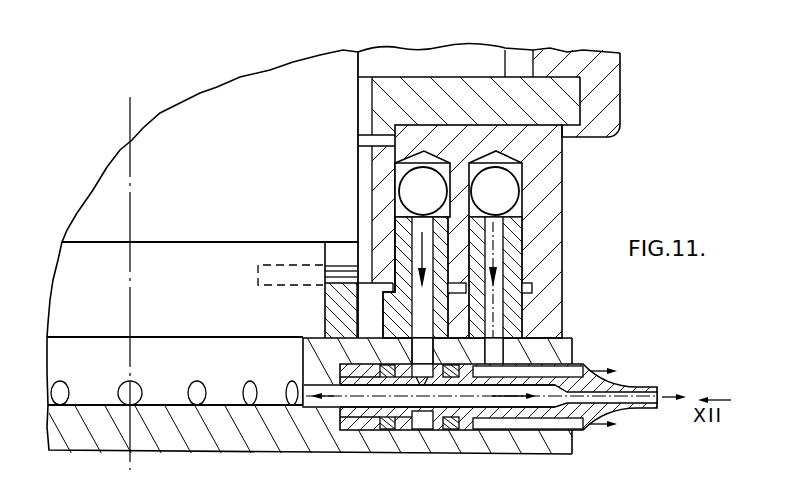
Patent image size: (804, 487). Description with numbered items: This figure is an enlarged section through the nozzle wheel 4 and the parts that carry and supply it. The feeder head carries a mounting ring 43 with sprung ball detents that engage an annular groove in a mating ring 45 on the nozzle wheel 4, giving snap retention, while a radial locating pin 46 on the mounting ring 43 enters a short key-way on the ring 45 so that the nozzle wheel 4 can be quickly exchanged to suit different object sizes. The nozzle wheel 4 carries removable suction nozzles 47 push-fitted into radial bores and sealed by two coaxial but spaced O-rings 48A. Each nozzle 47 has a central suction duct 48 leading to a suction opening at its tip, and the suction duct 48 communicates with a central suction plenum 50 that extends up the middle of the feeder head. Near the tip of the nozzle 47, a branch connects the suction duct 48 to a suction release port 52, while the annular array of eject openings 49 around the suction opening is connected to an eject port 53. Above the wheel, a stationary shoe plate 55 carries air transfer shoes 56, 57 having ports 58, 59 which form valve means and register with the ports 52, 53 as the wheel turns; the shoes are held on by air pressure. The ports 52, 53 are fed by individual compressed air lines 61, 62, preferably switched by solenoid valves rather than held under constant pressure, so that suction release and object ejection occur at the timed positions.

The nozzle wheel 4 is at (444, 459).
The mounting ring 43 is at (173, 257).
The mating ring 45 is at (393, 302).
The radial locating pin 46 is at (333, 267).
The suction nozzle 47 is at (637, 388).
The suction duct 48 is at (639, 408).
The seal rings 48A is at (452, 430).
The eject openings 49 is at (582, 369).
The central suction plenum 50 is at (171, 352).
The suction release port 52 is at (393, 325).
The eject port 53 is at (497, 352).
The shoe plate 55 is at (547, 199).
The air transfer shoe 56 is at (262, 286).
The air transfer shoe 57 is at (507, 338).
The port 58 is at (397, 298).
The port 59 is at (496, 337).
The compressed air line 61 is at (405, 190).
The compressed air line 62 is at (513, 187).